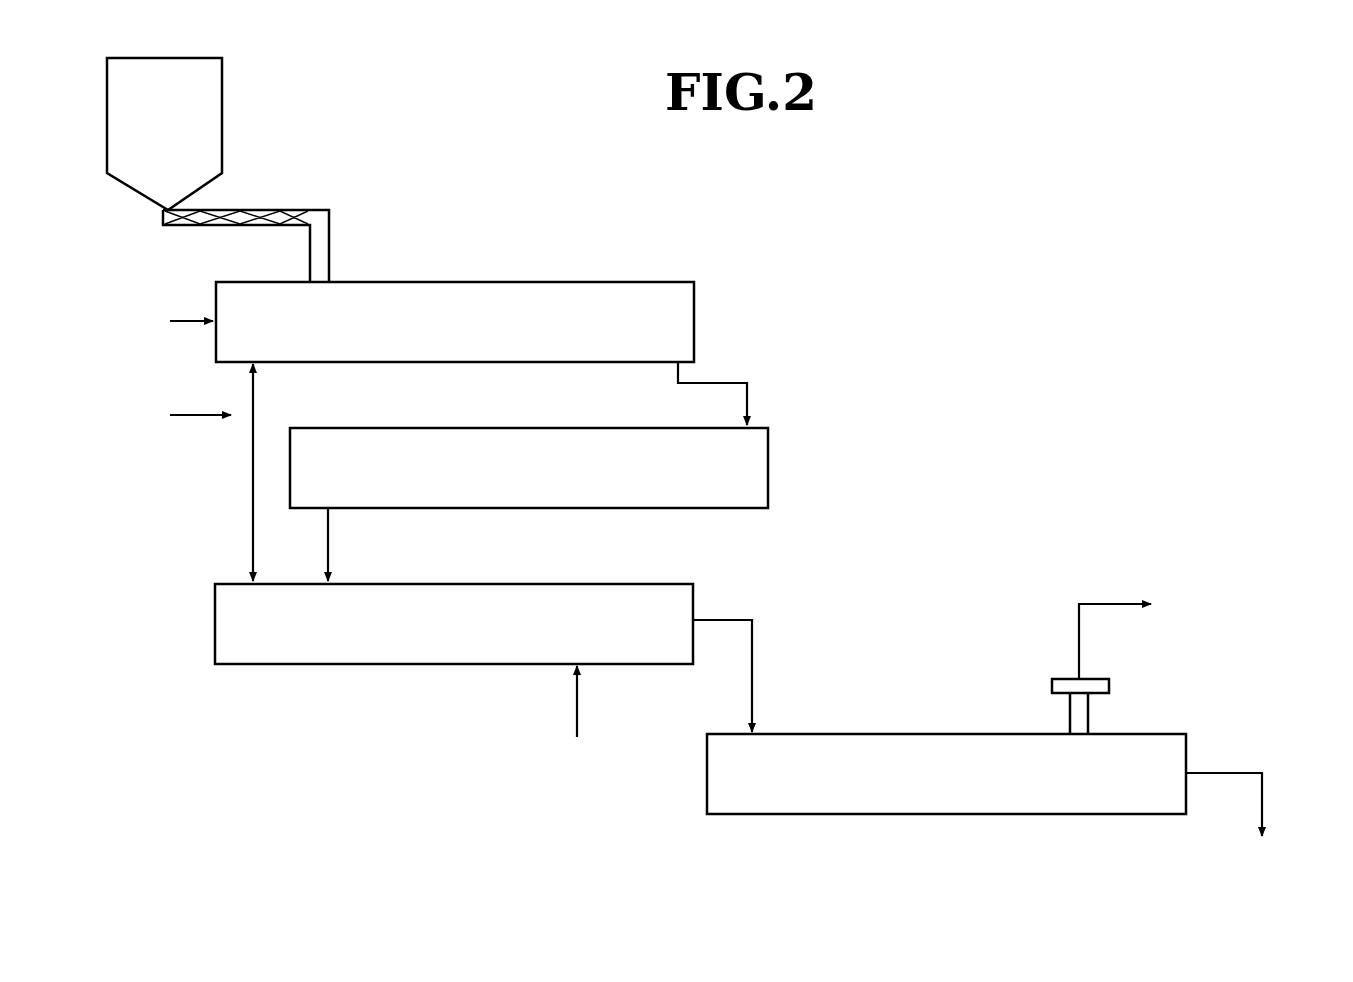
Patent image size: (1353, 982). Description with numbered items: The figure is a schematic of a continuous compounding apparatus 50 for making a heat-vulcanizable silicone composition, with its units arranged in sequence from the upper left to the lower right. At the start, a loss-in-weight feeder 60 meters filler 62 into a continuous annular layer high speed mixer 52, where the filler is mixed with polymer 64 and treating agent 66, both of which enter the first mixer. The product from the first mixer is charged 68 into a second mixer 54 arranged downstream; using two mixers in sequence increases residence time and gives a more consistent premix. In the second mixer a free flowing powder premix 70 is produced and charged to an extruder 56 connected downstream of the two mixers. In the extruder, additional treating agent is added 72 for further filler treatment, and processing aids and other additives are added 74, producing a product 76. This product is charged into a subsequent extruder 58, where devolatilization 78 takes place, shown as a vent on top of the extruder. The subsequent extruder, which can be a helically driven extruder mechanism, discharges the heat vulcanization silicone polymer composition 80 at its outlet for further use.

The apparatus 50 is at (857, 298).
The continuous annular layer high speed mixer 52 is at (479, 281).
The second mixer 54 is at (470, 427).
The extruder 56 is at (518, 583).
The subsequent extruder 58 is at (840, 733).
The loss-in-weight feeder 60 is at (222, 106).
The filler 62 is at (329, 240).
The polymer 64 is at (190, 317).
The treating agent 66 is at (255, 398).
The charging of product from first mixer 68 is at (705, 385).
The free flowing powder premix 70 is at (328, 537).
The addition of treating agent 72 is at (252, 540).
The addition of processing aids and other additives 74 is at (578, 705).
The product 76 is at (752, 665).
The devolatilization 78 is at (1079, 640).
The heat vulcanization silicone polymer composition 80 is at (1263, 797).